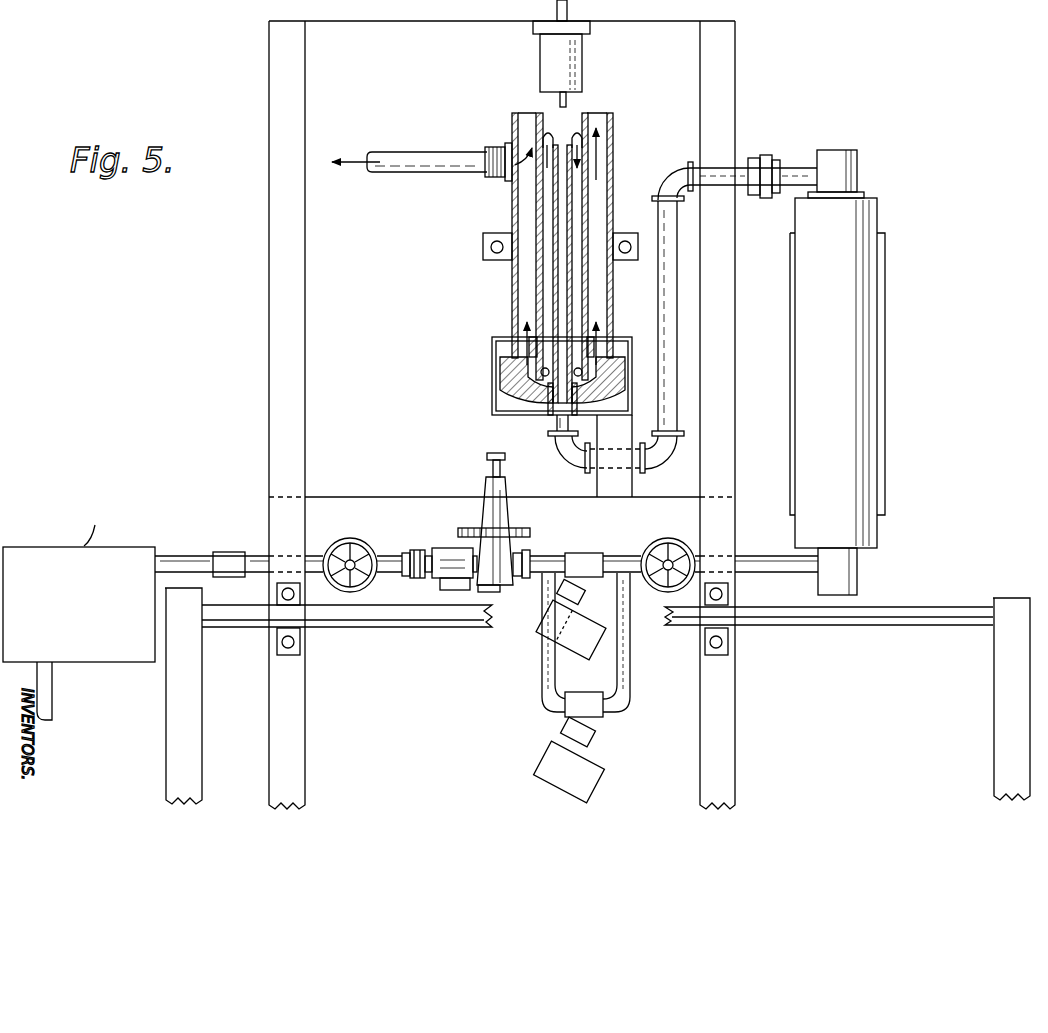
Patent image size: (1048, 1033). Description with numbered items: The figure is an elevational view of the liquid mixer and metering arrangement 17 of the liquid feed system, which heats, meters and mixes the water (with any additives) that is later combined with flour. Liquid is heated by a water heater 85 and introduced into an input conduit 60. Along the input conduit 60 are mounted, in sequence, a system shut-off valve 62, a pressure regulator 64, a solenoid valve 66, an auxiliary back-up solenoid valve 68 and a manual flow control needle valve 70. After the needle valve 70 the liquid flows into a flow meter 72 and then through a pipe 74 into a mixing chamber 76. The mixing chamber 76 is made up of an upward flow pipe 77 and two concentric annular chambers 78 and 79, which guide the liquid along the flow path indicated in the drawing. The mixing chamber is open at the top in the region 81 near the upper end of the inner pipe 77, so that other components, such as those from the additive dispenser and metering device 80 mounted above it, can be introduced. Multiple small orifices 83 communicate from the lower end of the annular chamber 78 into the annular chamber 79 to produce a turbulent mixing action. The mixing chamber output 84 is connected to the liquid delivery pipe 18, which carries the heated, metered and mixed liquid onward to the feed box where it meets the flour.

The mixer and metering system 17 is at (788, 86).
The liquid delivery pipe 18 is at (403, 152).
The input conduit 60 is at (228, 552).
The system shut-off valve 62 is at (355, 540).
The pressure regulator 64 is at (500, 483).
The solenoid valve 66 is at (576, 553).
The auxiliary back-up solenoid valve 68 is at (590, 688).
The manual flow control needle valve 70 is at (668, 550).
The flow meter 72 is at (852, 393).
The pipe 74 is at (713, 164).
The mixing chamber 76 is at (632, 135).
The upward flow pipe 77 is at (553, 290).
The annular chamber 78 is at (550, 263).
The annular chamber 79 is at (527, 215).
The additive dispenser and metering device 80 is at (540, 48).
The open top region 81 is at (568, 122).
The small orifices 83 is at (528, 364).
The mixing chamber output 84 is at (500, 178).
The water heater 85 is at (96, 621).